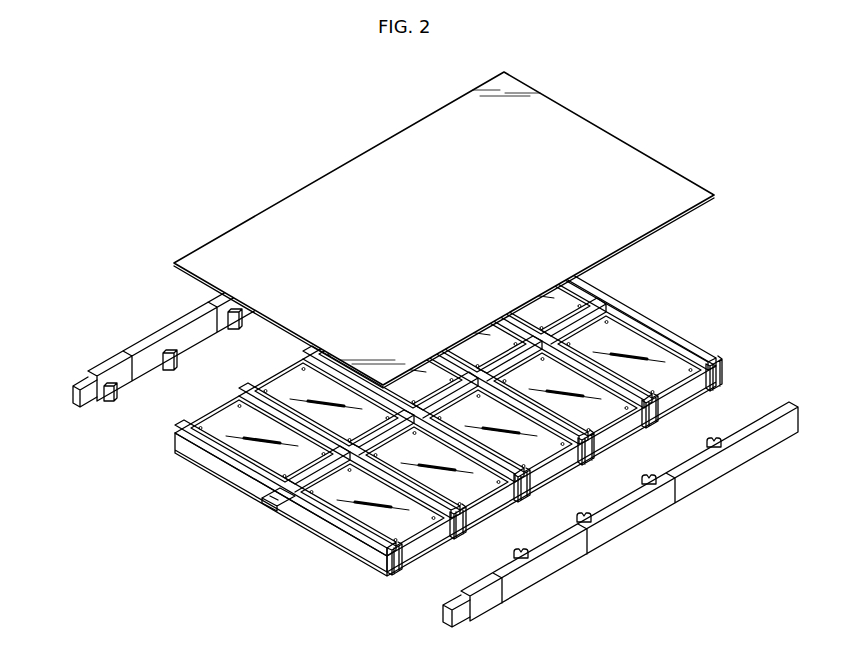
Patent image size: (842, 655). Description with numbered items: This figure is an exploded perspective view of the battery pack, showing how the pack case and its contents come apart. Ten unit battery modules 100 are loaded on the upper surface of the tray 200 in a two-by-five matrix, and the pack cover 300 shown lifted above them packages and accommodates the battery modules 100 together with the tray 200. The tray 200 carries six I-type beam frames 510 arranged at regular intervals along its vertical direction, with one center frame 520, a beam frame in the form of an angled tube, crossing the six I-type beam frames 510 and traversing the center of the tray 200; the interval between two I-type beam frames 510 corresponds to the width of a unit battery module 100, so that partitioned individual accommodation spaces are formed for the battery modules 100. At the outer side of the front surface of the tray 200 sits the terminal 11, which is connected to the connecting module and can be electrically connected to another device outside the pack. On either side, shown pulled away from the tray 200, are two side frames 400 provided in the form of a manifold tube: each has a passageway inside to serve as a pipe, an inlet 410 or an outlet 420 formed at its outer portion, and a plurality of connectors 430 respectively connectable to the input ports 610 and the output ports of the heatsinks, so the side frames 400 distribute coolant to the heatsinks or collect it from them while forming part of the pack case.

The terminal 11 is at (268, 503).
The battery module 100 is at (678, 363).
The tray 200 is at (410, 557).
The pack cover 300 is at (624, 150).
The side frame 400 is at (152, 321).
The inlet 410 is at (446, 617).
The outlet 420 is at (73, 399).
The connector 430 is at (231, 334).
The I-type beam frame 510 is at (597, 367).
The center frame 520 is at (590, 313).
The input port 610 is at (508, 496).